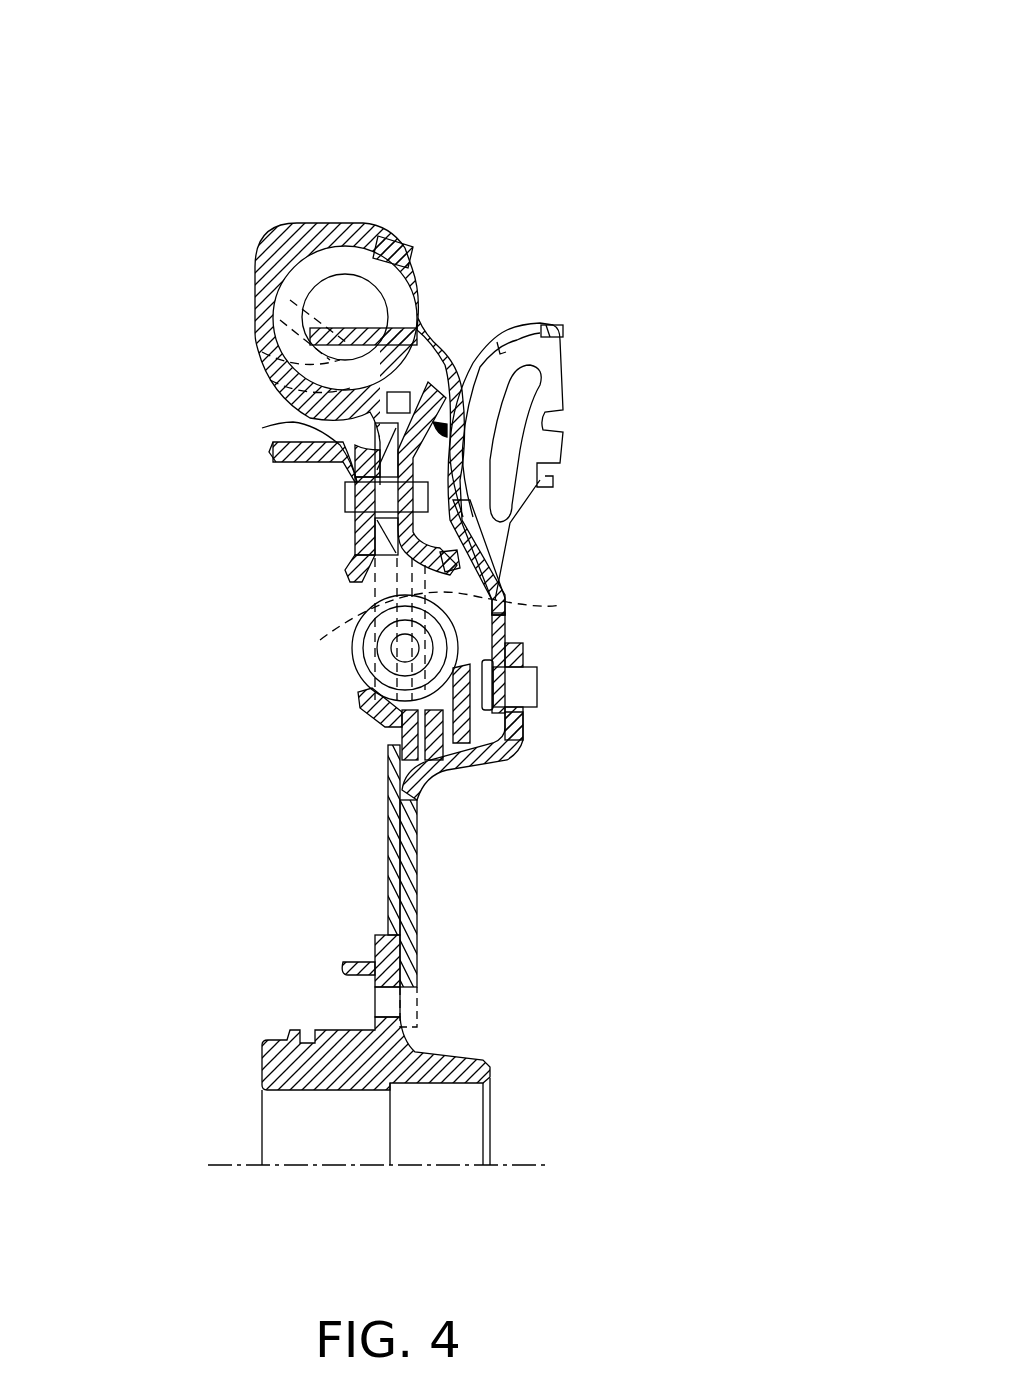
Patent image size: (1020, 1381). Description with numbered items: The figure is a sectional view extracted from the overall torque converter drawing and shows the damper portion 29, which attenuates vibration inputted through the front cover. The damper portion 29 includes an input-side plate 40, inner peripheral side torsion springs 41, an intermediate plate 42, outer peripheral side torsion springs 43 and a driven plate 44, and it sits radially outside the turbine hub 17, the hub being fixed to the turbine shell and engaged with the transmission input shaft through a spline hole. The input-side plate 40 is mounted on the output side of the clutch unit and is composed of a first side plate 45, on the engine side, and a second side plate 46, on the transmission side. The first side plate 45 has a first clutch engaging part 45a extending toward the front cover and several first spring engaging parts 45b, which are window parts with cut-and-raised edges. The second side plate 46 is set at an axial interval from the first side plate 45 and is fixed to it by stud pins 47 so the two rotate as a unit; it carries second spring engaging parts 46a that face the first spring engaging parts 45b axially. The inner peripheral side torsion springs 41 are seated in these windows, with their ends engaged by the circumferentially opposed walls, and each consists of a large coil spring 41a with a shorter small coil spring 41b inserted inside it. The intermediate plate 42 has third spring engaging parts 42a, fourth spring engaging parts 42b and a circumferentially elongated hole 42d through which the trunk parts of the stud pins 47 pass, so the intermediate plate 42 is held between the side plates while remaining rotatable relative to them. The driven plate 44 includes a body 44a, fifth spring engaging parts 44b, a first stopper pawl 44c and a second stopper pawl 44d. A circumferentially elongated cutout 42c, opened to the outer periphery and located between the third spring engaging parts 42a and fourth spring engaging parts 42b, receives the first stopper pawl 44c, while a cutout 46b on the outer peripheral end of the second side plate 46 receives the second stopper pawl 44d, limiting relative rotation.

The damper portion 29 is at (306, 142).
The intermediate plate 42 is at (256, 328).
The third spring engaging parts 42a is at (400, 660).
The fourth spring engaging parts 42b is at (385, 232).
The cutout 42c is at (280, 320).
The elongated hole 42d is at (293, 422).
The outer peripheral side torsion springs 43 is at (313, 270).
The driven plate 44 is at (735, 290).
The body 44a is at (450, 410).
The fifth spring engaging parts 44b is at (500, 343).
The first stopper pawl 44c is at (477, 373).
The second stopper pawl 44d is at (430, 442).
The input-side plate 40 is at (135, 532).
The first side plate 45 is at (352, 530).
The first clutch engaging part 45a is at (280, 455).
The first spring engaging parts 45b is at (340, 628).
The second side plate 46 is at (432, 565).
The second spring engaging parts 46a is at (500, 612).
The cutout 46b is at (490, 465).
The stud pins 47 is at (460, 500).
The inner peripheral side torsion springs 41 is at (648, 650).
The large coil spring 41a is at (460, 630).
The small coil spring 41b is at (520, 730).
The turbine hub 17 is at (443, 1100).